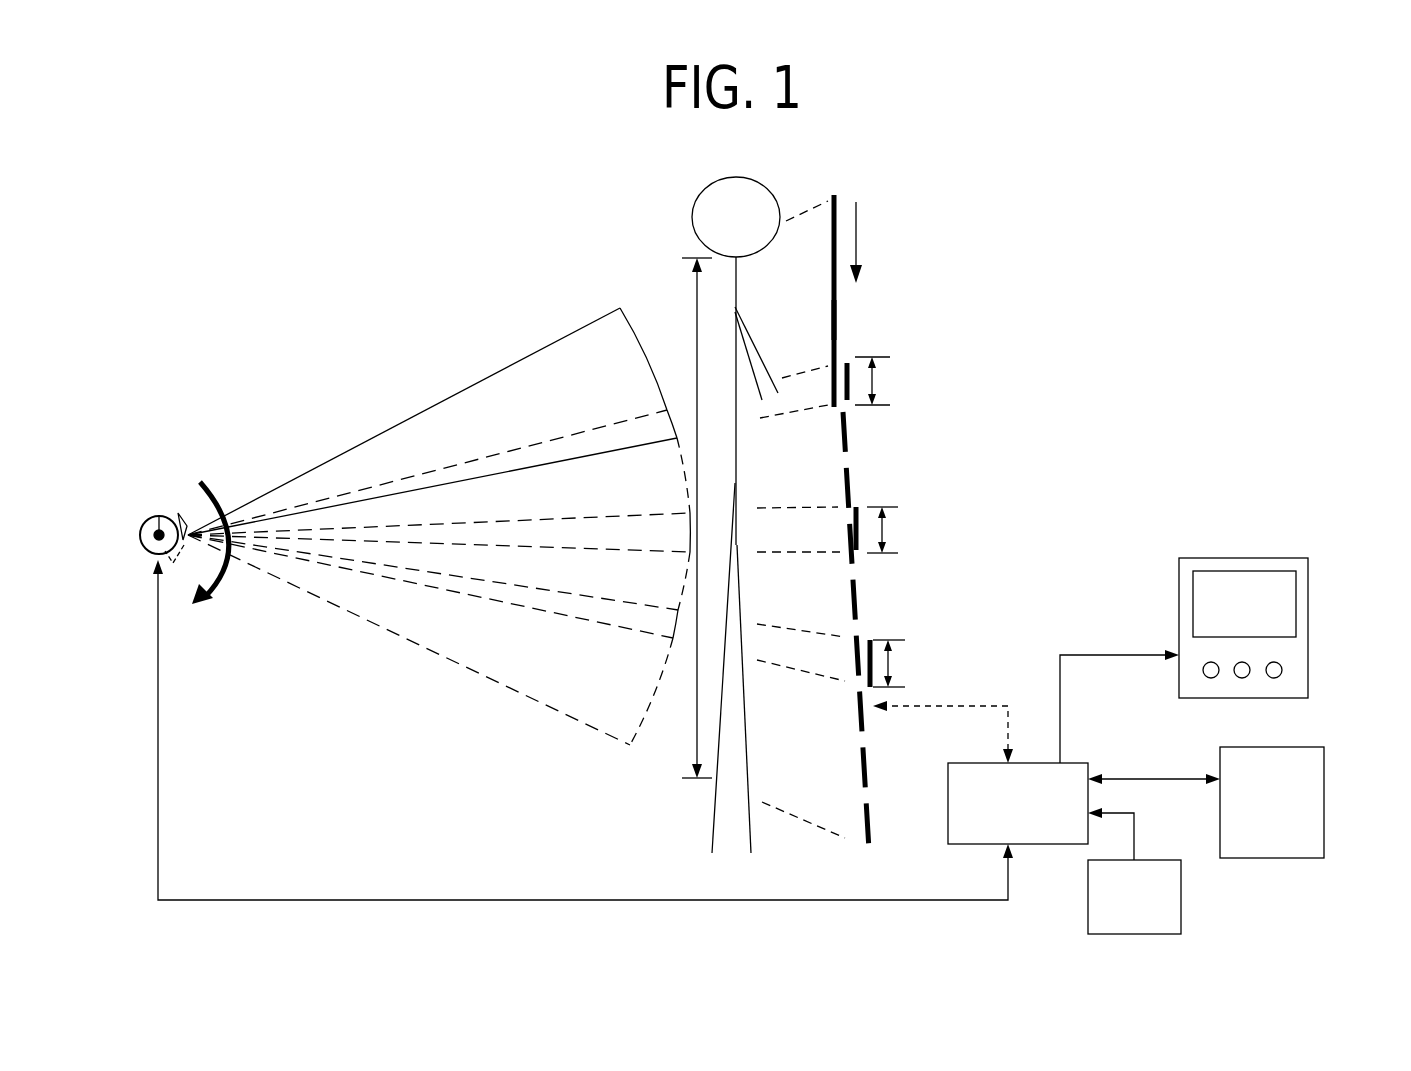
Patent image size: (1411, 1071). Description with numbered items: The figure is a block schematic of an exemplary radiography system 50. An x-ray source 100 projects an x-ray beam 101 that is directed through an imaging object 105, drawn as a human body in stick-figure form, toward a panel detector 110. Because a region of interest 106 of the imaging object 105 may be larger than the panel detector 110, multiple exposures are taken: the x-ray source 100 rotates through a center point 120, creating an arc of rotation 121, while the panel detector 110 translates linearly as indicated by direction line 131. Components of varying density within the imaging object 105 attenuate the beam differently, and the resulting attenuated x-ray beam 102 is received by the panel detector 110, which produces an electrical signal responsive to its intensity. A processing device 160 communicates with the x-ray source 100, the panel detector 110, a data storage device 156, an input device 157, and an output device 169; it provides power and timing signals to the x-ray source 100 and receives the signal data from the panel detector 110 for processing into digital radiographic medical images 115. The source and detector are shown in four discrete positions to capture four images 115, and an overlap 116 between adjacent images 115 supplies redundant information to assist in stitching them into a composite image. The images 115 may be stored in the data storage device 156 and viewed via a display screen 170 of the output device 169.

The radiography system 50 is at (336, 338).
The x-ray source 100 is at (143, 552).
The x-ray beam 101 is at (503, 365).
The attenuated x-ray beam 102 is at (830, 200).
The imaging object 105 is at (700, 196).
The region of interest 106 is at (692, 748).
The panel detector 110 is at (850, 304).
The digital radiographic medical images 115 is at (837, 318).
The overlap 116 is at (874, 378).
The center point 120 is at (159, 516).
The arc of rotation 121 is at (208, 488).
The direction line 131 is at (858, 227).
The data storage device 156 is at (1325, 770).
The input device 157 is at (1182, 875).
The processing device 160 is at (1089, 766).
The output device 169 is at (1252, 558).
The display screen 170 is at (1297, 580).